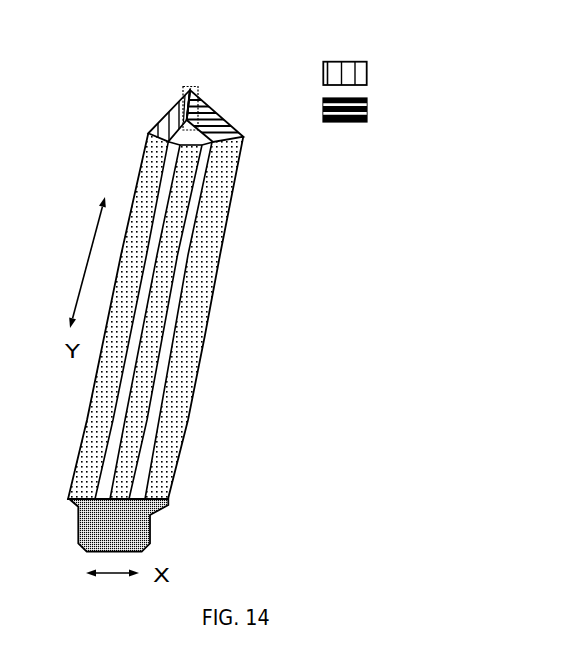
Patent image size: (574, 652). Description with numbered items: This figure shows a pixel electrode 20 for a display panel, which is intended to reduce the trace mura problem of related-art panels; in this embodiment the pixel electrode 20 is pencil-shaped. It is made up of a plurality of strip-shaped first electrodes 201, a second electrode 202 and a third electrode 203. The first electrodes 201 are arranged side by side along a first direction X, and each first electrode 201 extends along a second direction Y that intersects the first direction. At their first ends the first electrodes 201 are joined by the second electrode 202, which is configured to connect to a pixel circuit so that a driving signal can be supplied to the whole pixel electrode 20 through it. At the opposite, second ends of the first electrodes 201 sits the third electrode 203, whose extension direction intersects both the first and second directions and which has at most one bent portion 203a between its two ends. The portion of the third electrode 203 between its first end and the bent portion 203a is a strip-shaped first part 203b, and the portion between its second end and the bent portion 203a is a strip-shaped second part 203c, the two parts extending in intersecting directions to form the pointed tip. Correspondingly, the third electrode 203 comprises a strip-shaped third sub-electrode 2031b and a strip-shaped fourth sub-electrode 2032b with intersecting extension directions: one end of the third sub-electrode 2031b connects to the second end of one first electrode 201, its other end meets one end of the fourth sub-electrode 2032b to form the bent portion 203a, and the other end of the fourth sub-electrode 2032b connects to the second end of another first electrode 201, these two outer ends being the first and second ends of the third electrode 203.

The pixel electrode 20 is at (70, 90).
The first electrode 201 is at (205, 335).
The second electrode 202 is at (158, 532).
The third electrode 203 is at (255, 30).
The bent portion 203a is at (190, 78).
The first part 203b is at (152, 114).
The second part 203c is at (230, 107).
The fourth sub-electrode 2032b is at (382, 74).
The third sub-electrode 2031b is at (382, 109).